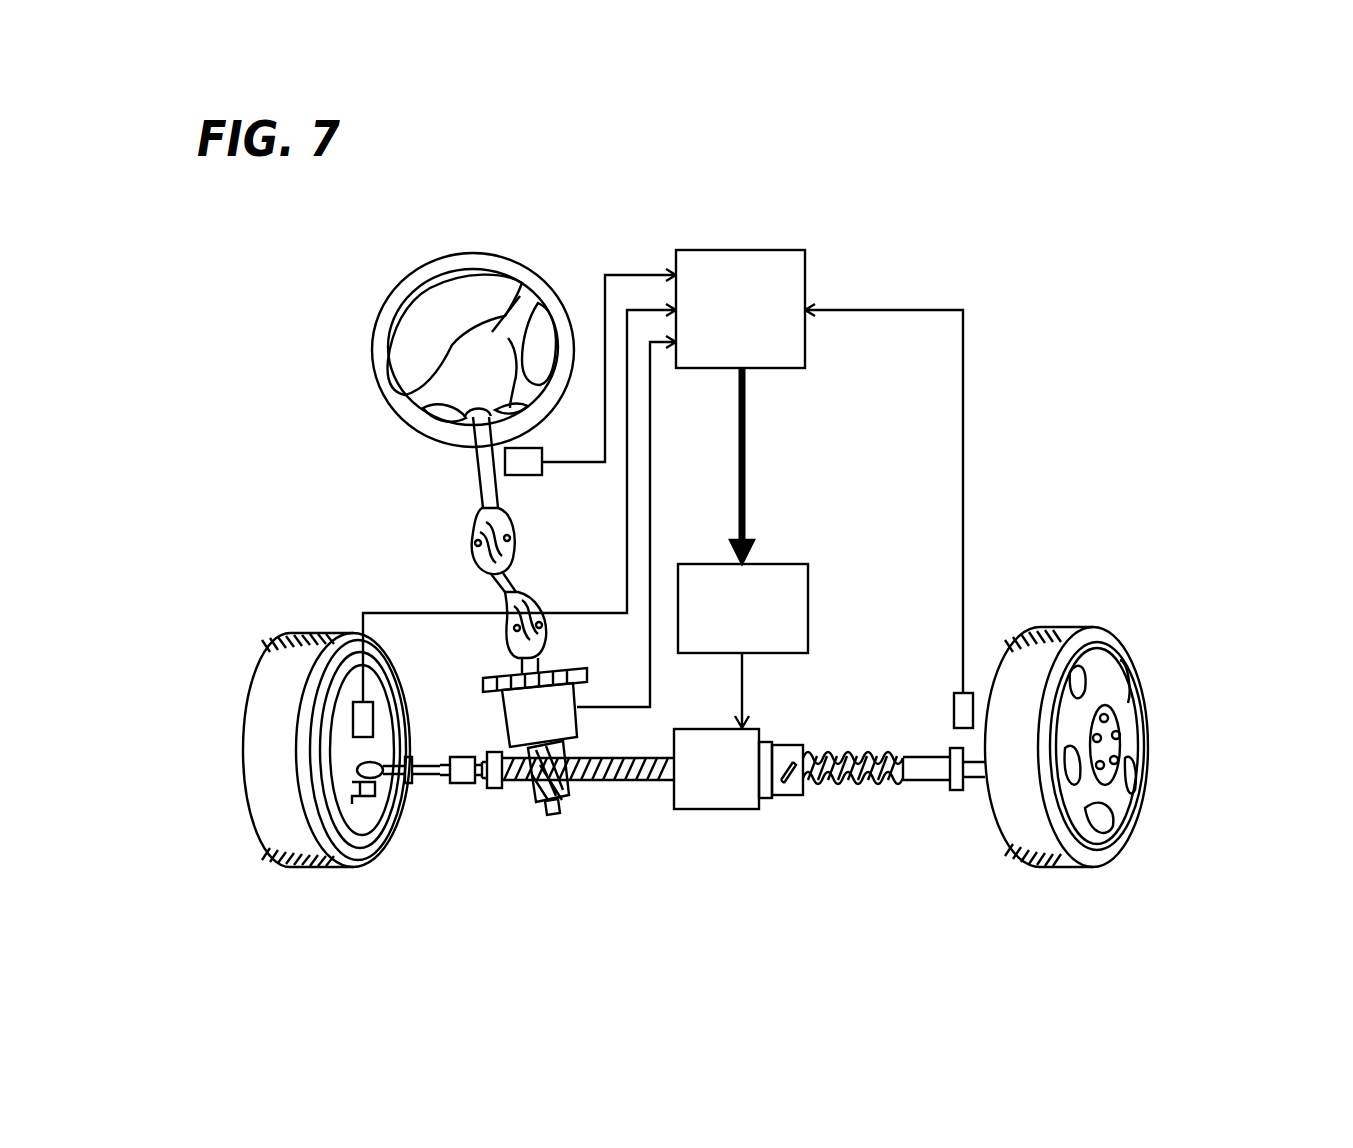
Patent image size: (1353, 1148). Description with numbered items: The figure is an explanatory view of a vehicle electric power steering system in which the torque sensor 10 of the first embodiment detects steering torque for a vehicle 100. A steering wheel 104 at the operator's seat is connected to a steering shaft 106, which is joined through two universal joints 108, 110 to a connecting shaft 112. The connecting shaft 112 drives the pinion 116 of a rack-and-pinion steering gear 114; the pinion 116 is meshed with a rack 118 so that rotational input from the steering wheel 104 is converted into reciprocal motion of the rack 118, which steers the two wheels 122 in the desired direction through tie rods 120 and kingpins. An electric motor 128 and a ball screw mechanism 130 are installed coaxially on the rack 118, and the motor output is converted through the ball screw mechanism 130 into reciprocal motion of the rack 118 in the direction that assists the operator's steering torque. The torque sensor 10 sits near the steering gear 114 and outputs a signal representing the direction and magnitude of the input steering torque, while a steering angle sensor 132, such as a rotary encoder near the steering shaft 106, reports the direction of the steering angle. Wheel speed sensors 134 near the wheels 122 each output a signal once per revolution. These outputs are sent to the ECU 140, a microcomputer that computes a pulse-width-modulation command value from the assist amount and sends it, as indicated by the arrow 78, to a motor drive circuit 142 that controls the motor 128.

The vehicle 100 is at (1012, 549).
The steering wheel 104 is at (402, 290).
The steering shaft 106 is at (476, 462).
The universal joint 108 is at (509, 521).
The universal joint 110 is at (512, 602).
The connecting shaft 112 is at (550, 658).
The torque sensor 10 is at (578, 696).
The rack 118 is at (583, 758).
The rack-and-pinion steering gear 114 is at (510, 795).
The pinion 116 is at (538, 814).
The tie rods 120 is at (378, 766).
The wheels 122 is at (303, 633).
The wheel speed sensors 134 is at (373, 705).
The ECU 140 is at (778, 368).
The control signal 78 is at (752, 484).
The motor drive circuit 142 is at (808, 583).
The electric motor 128 is at (716, 810).
The ball screw mechanism 130 is at (852, 740).
The steering angle sensor 132 is at (537, 448).